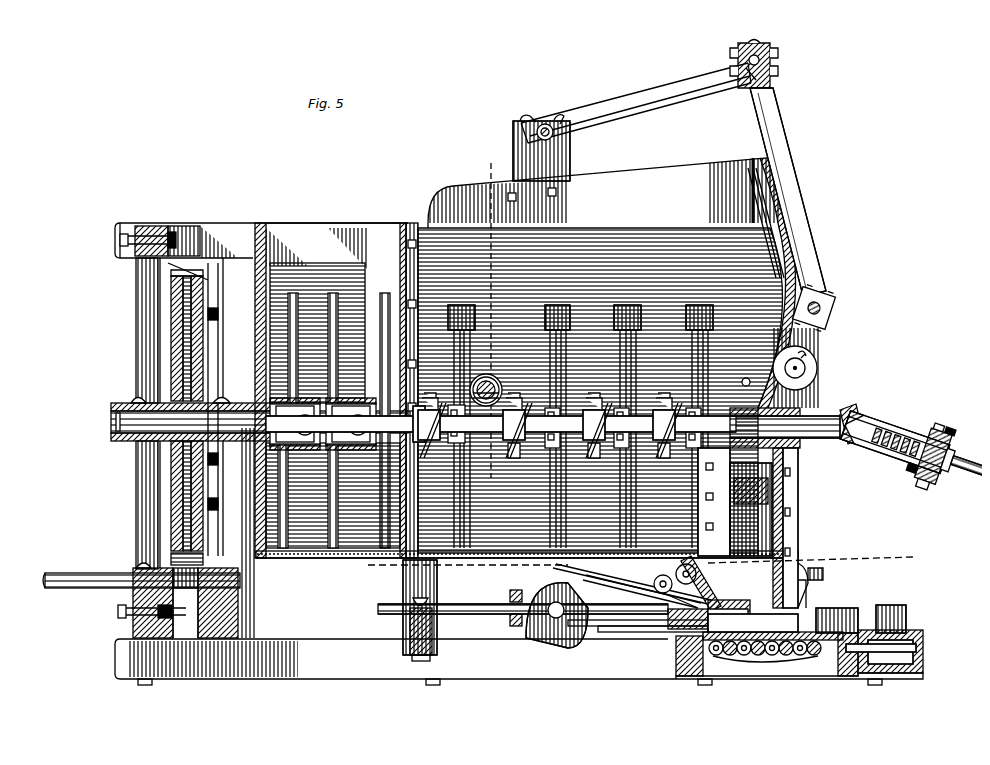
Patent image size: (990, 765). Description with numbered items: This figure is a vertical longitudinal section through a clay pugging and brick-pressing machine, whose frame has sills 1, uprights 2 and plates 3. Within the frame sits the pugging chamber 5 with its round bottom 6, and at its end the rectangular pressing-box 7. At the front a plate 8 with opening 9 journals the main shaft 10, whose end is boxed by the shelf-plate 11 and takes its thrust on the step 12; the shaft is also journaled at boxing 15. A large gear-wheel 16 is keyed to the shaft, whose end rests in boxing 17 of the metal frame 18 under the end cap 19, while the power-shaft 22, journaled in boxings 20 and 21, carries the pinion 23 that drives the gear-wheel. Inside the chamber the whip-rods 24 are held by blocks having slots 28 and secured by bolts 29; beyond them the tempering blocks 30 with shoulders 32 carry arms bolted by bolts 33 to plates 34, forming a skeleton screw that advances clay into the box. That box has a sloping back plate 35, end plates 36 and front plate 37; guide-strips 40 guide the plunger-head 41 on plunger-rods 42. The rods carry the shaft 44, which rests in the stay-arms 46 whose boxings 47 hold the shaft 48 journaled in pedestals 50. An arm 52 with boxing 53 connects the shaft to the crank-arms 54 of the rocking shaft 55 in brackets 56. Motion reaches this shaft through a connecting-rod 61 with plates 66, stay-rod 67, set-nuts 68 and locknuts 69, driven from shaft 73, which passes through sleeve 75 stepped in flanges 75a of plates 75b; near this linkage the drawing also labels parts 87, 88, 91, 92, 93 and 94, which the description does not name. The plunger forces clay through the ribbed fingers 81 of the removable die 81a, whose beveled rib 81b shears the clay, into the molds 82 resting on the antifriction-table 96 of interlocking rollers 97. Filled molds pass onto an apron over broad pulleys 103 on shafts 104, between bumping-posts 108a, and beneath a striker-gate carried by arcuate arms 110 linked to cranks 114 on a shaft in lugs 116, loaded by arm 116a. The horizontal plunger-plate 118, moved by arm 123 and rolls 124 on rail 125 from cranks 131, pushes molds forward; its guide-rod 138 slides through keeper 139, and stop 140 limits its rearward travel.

The sills 1 is at (358, 658).
The uprights 2 is at (394, 577).
The plates 3 is at (261, 430).
The pugging chamber 5 is at (412, 390).
The round bottom 6 is at (764, 695).
The pressing-box 7 is at (790, 514).
The plate 8 is at (738, 374).
The opening 9 is at (818, 389).
The main shaft 10 is at (806, 443).
The shelf-plate 11 is at (854, 418).
The step 12 is at (848, 410).
The boxing 15 is at (214, 394).
The gear-wheel 16 is at (165, 350).
The boxing 17 is at (124, 394).
The metal frame 18 is at (133, 493).
The end cap 19 is at (103, 417).
The boxing 20 is at (128, 561).
The boxing 21 is at (212, 562).
The power-shaft 22 is at (92, 582).
The pinion 23 is at (180, 600).
The whip-rods 24 is at (322, 293).
The slots 28 is at (305, 442).
The bolts 29 is at (360, 442).
The blocks 30 is at (510, 395).
The shoulders 32 is at (588, 392).
The bolts 33 is at (545, 300).
The plates 34 is at (446, 300).
The sloping back plate 35 is at (652, 574).
The end plates 36 is at (784, 531).
The front plate 37 is at (800, 572).
The vertical guide-strips 40 is at (740, 500).
The plunger-head 41 is at (778, 488).
The plunger-rods 42 is at (758, 262).
The shaft 44 is at (742, 66).
The oscillating stay-arms 46 is at (628, 90).
The boxings 47 is at (524, 112).
The shaft 48 is at (537, 114).
The pedestals 50 is at (562, 150).
The arm 52 is at (780, 132).
The boxing 53 is at (765, 50).
The crank-arms 54 is at (822, 331).
The rocking shaft 55 is at (797, 360).
The brackets 56 is at (820, 382).
The connecting-rod 61 is at (884, 430).
The plates 66 is at (934, 446).
The stay-rod 67 is at (866, 452).
The threaded set-nuts 68 is at (920, 480).
The locknuts 69 is at (906, 470).
The shaft 73 is at (470, 388).
The sleeve 75 is at (484, 370).
The annular flanges 75a is at (478, 367).
The plates 75b is at (496, 384).
The ribbed fingers 81 is at (790, 588).
The removable die 81a is at (753, 625).
The beveled rib 81b is at (760, 628).
The molds 82 is at (822, 606).
The arm 87 is at (852, 440).
The arm 88 is at (860, 408).
The rod 91 is at (956, 470).
The screw 92 is at (910, 422).
The screw 93 is at (940, 420).
The screw 94 is at (926, 420).
The antifriction-table 96 is at (740, 648).
The interlocking rollers 97 is at (792, 648).
The broad pulleys 103 is at (910, 626).
The shafts 104 is at (920, 640).
The bumping-posts 108a is at (890, 606).
The arcuate arms 110 is at (797, 562).
The cranks 114 is at (622, 582).
The lugs 116 is at (688, 578).
The arm 116a is at (845, 562).
The horizontal plunger-plate 118 is at (680, 580).
The arm 123 is at (566, 580).
The rolls 124 is at (688, 634).
The rail 125 is at (608, 624).
The cranks 131 is at (540, 584).
The guide-rod 138 is at (470, 604).
The keeper 139 is at (436, 596).
The stop 140 is at (504, 596).